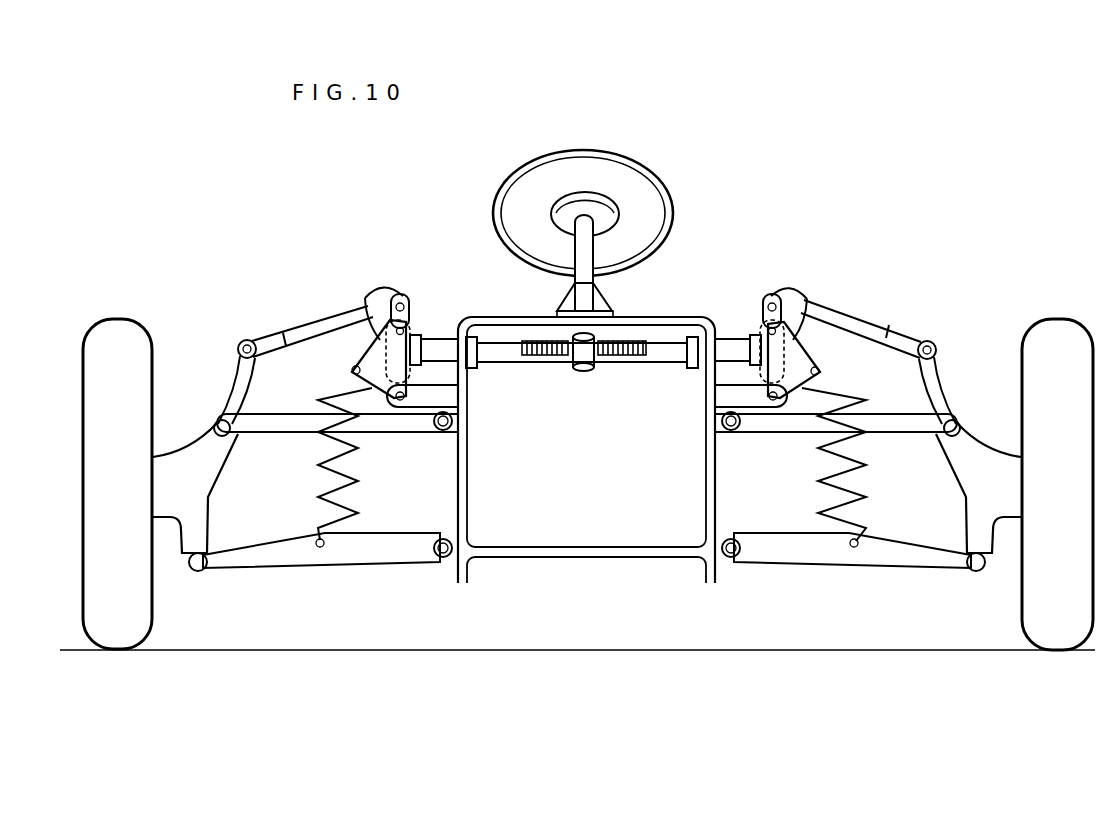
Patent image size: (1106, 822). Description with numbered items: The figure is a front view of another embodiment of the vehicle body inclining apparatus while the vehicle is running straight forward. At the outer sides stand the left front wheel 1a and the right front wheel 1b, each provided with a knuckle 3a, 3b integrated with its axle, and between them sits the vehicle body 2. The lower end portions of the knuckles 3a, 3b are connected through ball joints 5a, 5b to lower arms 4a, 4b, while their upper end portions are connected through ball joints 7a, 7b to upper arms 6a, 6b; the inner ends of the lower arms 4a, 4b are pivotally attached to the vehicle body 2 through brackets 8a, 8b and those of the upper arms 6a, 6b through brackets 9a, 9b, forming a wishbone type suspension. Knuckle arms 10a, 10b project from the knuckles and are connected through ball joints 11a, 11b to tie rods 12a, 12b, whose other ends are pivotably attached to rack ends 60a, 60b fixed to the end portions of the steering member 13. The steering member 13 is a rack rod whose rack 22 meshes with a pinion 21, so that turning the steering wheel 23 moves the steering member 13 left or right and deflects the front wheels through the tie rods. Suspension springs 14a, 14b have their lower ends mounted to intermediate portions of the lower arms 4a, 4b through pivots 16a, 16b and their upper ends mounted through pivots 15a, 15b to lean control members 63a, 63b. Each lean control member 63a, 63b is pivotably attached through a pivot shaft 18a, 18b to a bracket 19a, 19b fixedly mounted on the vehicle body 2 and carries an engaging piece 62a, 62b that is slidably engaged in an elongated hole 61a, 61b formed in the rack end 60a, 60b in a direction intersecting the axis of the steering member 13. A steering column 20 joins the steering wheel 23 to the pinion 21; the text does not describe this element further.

The left front wheel 1a is at (1048, 649).
The right front wheel 1b is at (119, 649).
The vehicle body 2 is at (665, 316).
The knuckle 3a is at (955, 483).
The knuckle 3b is at (212, 488).
The lower arm 4a is at (801, 562).
The lower arm 4b is at (369, 562).
The ball joint 5a is at (973, 573).
The ball joint 5b is at (201, 572).
The upper arm 6a is at (882, 432).
The upper arm 6b is at (296, 428).
The ball joint 7a is at (957, 420).
The ball joint 7b is at (218, 420).
The bracket 8a is at (723, 562).
The bracket 8b is at (452, 562).
The bracket 9a is at (719, 432).
The bracket 9b is at (452, 432).
The knuckle arm 10a is at (930, 382).
The knuckle arm 10b is at (246, 378).
The ball joint 11a is at (932, 341).
The ball joint 11b is at (243, 340).
The tie rod 12a is at (866, 318).
The tie rod 12b is at (313, 322).
The steering member 13 is at (666, 355).
The suspension spring 14a is at (822, 483).
The suspension spring 14b is at (348, 485).
The pivot 15a is at (820, 373).
The pivot 15b is at (353, 368).
The pivot 16a is at (855, 548).
The pivot 16b is at (318, 556).
The pivot shaft 18a is at (773, 410).
The pivot shaft 18b is at (399, 410).
The bracket 19a is at (718, 398).
The bracket 19b is at (452, 398).
The steering shaft 20 is at (590, 284).
The pinion 21 is at (586, 370).
The rack 22 is at (552, 355).
The steering wheel 23 is at (663, 190).
The rack end 60a is at (752, 338).
The rack end 60b is at (418, 340).
The elongated hole 61a is at (784, 334).
The elongated hole 61b is at (420, 336).
The engaging piece 62a is at (770, 300).
The engaging piece 62b is at (400, 296).
The lean control member 63a is at (800, 352).
The lean control member 63b is at (367, 305).